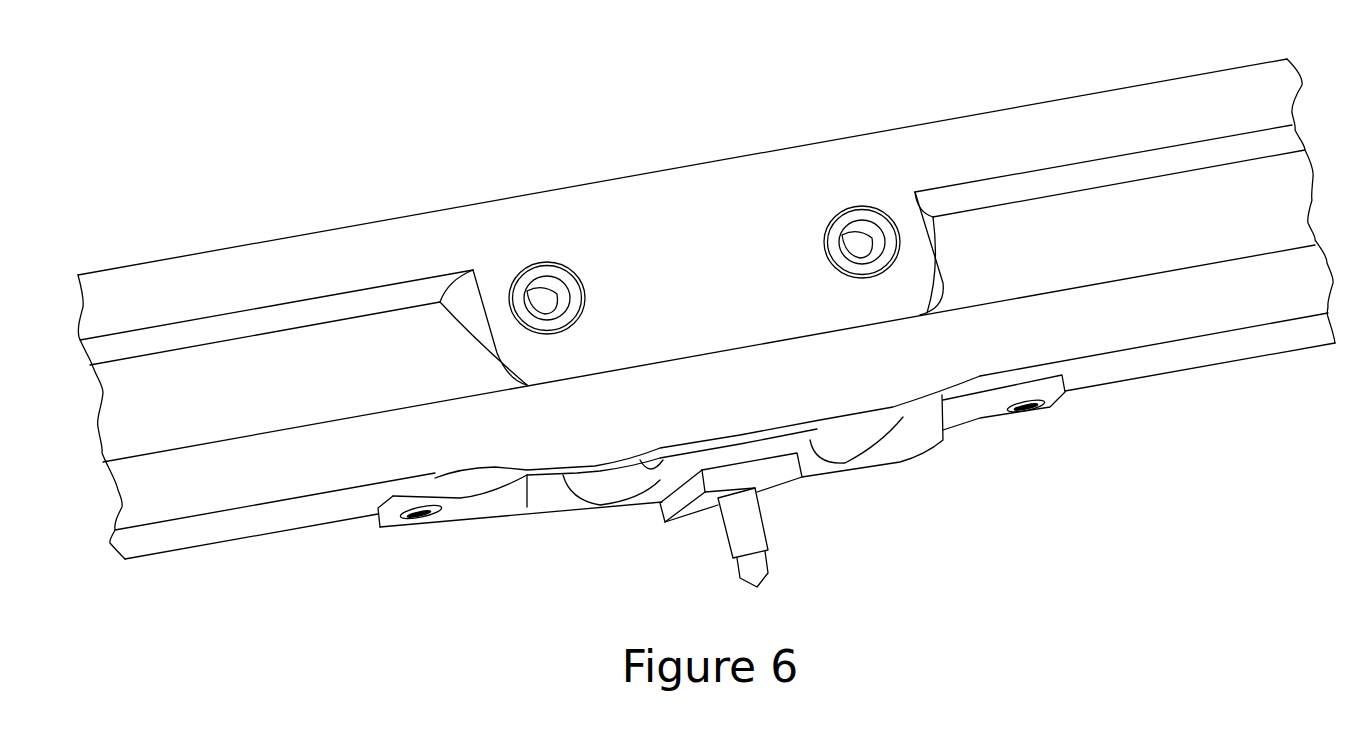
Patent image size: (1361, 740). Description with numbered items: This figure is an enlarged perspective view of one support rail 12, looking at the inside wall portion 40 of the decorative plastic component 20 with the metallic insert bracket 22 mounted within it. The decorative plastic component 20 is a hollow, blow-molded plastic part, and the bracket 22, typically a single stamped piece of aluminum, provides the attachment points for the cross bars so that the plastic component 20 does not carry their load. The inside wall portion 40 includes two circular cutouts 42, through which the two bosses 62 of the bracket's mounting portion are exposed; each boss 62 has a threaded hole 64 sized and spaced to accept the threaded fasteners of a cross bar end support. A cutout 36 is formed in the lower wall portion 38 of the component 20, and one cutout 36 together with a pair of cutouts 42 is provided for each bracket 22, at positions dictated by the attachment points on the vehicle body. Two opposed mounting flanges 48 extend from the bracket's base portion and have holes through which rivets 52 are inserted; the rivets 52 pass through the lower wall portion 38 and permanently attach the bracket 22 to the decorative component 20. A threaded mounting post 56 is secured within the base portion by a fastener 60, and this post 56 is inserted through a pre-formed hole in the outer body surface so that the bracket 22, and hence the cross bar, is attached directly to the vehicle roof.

The support rail 12 is at (315, 102).
The decorative plastic component 20 is at (315, 205).
The metallic insert bracket 22 is at (960, 470).
The cutout 36 is at (517, 486).
The lower wall portion 38 is at (257, 530).
The inside wall portion 40 is at (703, 218).
The circular cutouts 42 is at (519, 282).
The mounting flanges 48 is at (438, 496).
The rivets 52 is at (420, 522).
The threaded mounting post 56 is at (757, 565).
The fastener 60 is at (782, 468).
The bosses 62 is at (583, 285).
The threaded hole 64 is at (552, 298).